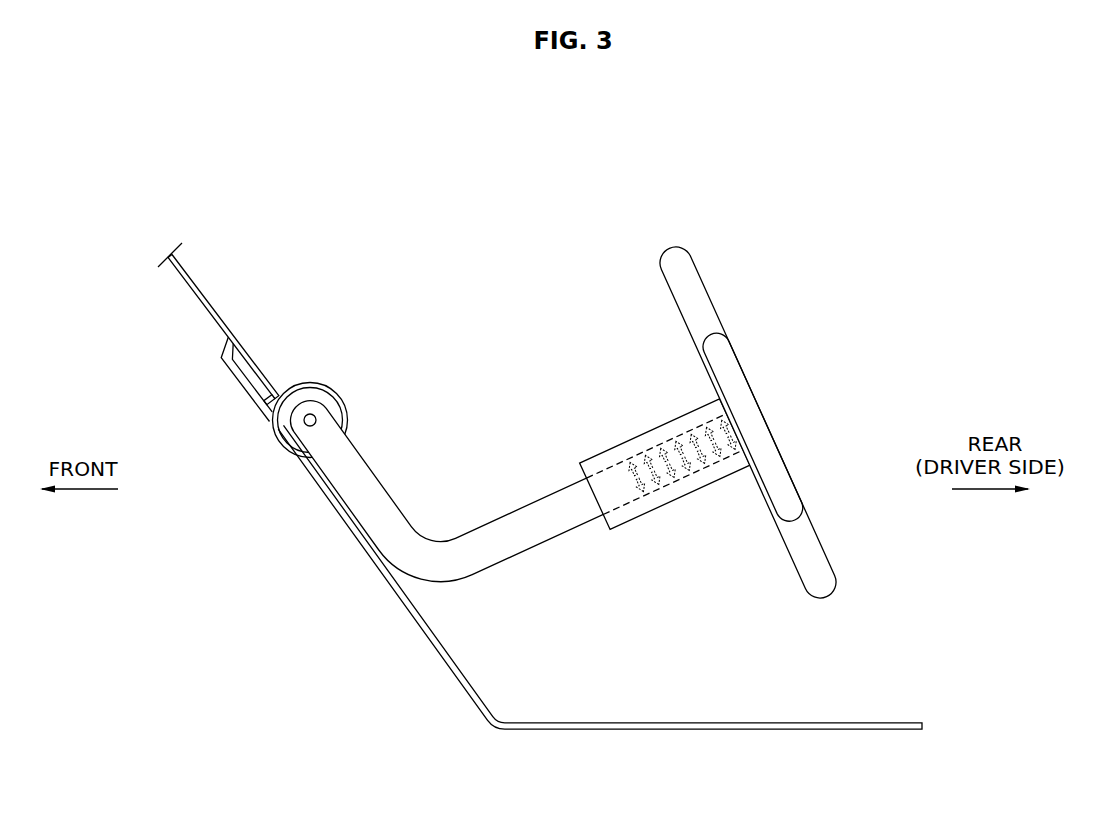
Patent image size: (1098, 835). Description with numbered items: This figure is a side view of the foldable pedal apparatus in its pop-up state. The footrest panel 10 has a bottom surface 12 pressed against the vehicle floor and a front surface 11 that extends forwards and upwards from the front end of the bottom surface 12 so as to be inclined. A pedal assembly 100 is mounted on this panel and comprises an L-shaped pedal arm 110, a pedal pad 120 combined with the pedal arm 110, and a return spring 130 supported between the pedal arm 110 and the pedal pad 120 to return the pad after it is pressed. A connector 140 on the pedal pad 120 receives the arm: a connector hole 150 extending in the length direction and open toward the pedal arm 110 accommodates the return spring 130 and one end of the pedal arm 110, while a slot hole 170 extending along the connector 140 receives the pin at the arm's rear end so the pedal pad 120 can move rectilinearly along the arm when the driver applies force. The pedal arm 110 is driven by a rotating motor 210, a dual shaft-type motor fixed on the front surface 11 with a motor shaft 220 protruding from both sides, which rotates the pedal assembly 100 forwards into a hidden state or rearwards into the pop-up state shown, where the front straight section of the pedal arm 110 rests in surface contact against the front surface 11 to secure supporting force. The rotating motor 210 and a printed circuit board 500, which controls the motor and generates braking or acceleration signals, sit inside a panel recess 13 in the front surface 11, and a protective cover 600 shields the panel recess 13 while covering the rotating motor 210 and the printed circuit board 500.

The footrest panel 10 is at (466, 710).
The front surface 11 is at (190, 288).
The bottom surface 12 is at (722, 730).
The panel recess 13 is at (250, 363).
The pedal assembly 100 is at (676, 238).
The pedal arm 110 is at (460, 564).
The pedal pad 120 is at (700, 308).
The return spring 130 is at (702, 470).
The connector 140 is at (593, 457).
The connector hole 150 is at (667, 487).
The slot hole 170 is at (687, 435).
The rotating motor 210 is at (335, 403).
The motor shaft 220 is at (310, 421).
The printed circuit board 500 is at (273, 397).
The protective cover 600 is at (313, 381).